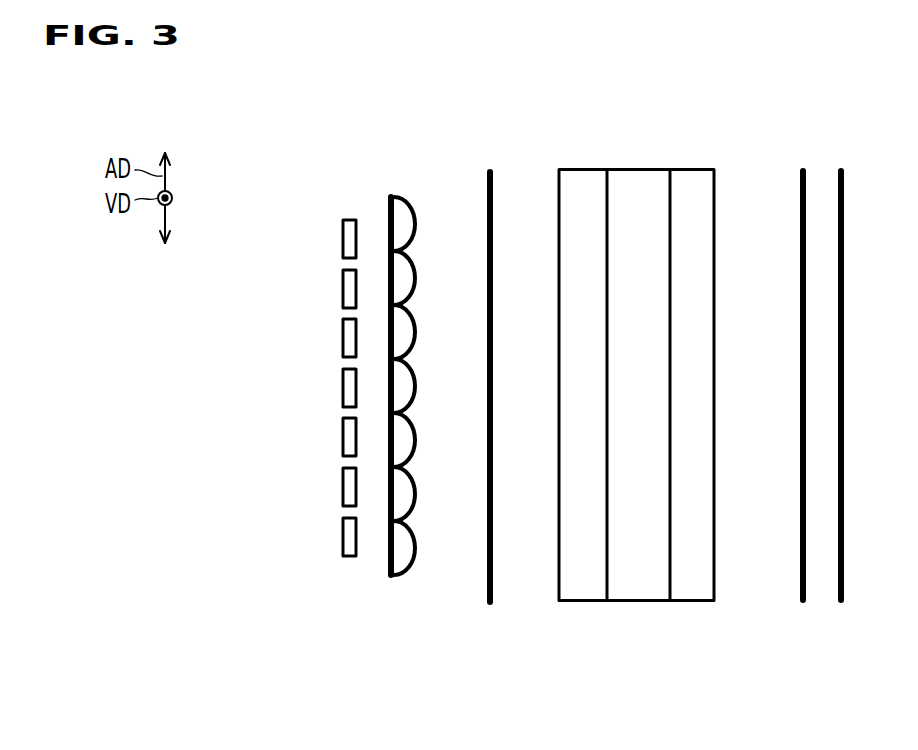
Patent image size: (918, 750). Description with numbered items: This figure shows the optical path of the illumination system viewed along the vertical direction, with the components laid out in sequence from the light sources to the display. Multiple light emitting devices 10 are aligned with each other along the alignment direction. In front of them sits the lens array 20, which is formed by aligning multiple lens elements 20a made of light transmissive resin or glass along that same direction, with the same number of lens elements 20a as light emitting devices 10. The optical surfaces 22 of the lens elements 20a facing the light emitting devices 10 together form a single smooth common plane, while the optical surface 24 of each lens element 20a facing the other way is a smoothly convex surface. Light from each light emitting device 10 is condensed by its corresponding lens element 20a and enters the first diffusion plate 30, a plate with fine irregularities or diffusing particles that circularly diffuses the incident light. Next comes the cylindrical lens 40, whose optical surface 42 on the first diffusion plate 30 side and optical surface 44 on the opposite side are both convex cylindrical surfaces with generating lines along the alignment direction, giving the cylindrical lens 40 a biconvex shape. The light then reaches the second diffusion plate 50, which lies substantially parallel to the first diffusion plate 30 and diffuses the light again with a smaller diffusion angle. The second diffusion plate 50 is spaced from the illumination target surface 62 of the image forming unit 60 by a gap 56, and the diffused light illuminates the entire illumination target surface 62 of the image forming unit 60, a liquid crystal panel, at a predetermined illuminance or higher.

The light emitting device 10 is at (343, 234).
The lens array 20 is at (393, 577).
The lens element 20a is at (388, 232).
The optical surface 22 is at (385, 208).
The optical surface 24 is at (416, 224).
The first diffusion plate 30 is at (487, 574).
The cylindrical lens 40 is at (638, 604).
The optical surface 42 is at (585, 200).
The optical surface 44 is at (687, 200).
The second diffusion plate 50 is at (800, 572).
The gap 56 is at (822, 575).
The image forming unit 60 is at (845, 583).
The illumination target surface 62 is at (838, 198).